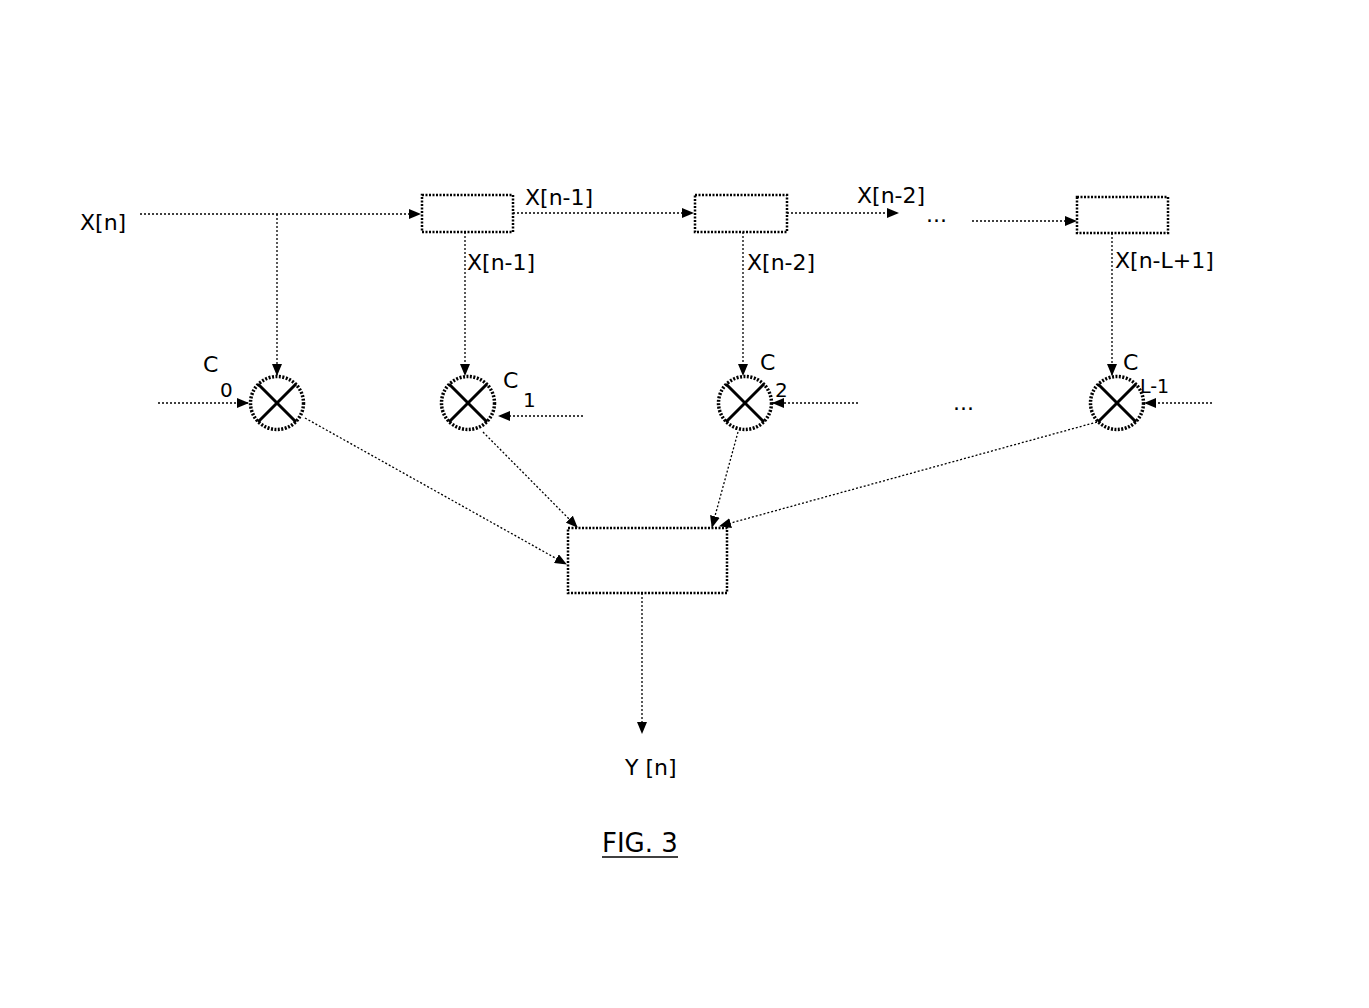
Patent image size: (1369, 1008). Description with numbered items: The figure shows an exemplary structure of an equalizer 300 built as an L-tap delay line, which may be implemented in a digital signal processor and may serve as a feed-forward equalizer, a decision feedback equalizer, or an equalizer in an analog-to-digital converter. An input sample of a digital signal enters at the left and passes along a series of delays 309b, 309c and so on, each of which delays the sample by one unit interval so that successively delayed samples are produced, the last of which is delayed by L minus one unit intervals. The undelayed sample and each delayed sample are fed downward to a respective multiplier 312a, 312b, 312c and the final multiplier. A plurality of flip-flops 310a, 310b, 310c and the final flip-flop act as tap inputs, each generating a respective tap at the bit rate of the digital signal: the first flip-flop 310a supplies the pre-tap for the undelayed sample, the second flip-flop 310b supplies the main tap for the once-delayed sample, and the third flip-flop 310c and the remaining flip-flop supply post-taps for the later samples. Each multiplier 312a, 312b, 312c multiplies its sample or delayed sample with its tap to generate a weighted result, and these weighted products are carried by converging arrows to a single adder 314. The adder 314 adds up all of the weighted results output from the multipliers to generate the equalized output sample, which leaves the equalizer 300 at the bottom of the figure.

The equalizer 300 is at (1097, 120).
The delay 309b is at (467, 197).
The delay 309c is at (741, 197).
The flip-flop 310a is at (169, 400).
The flip-flop 310b is at (575, 417).
The flip-flop 310c is at (817, 418).
The multiplier 312a is at (283, 424).
The multiplier 312b is at (498, 413).
The multiplier 312c is at (763, 419).
The adder 314 is at (647, 576).